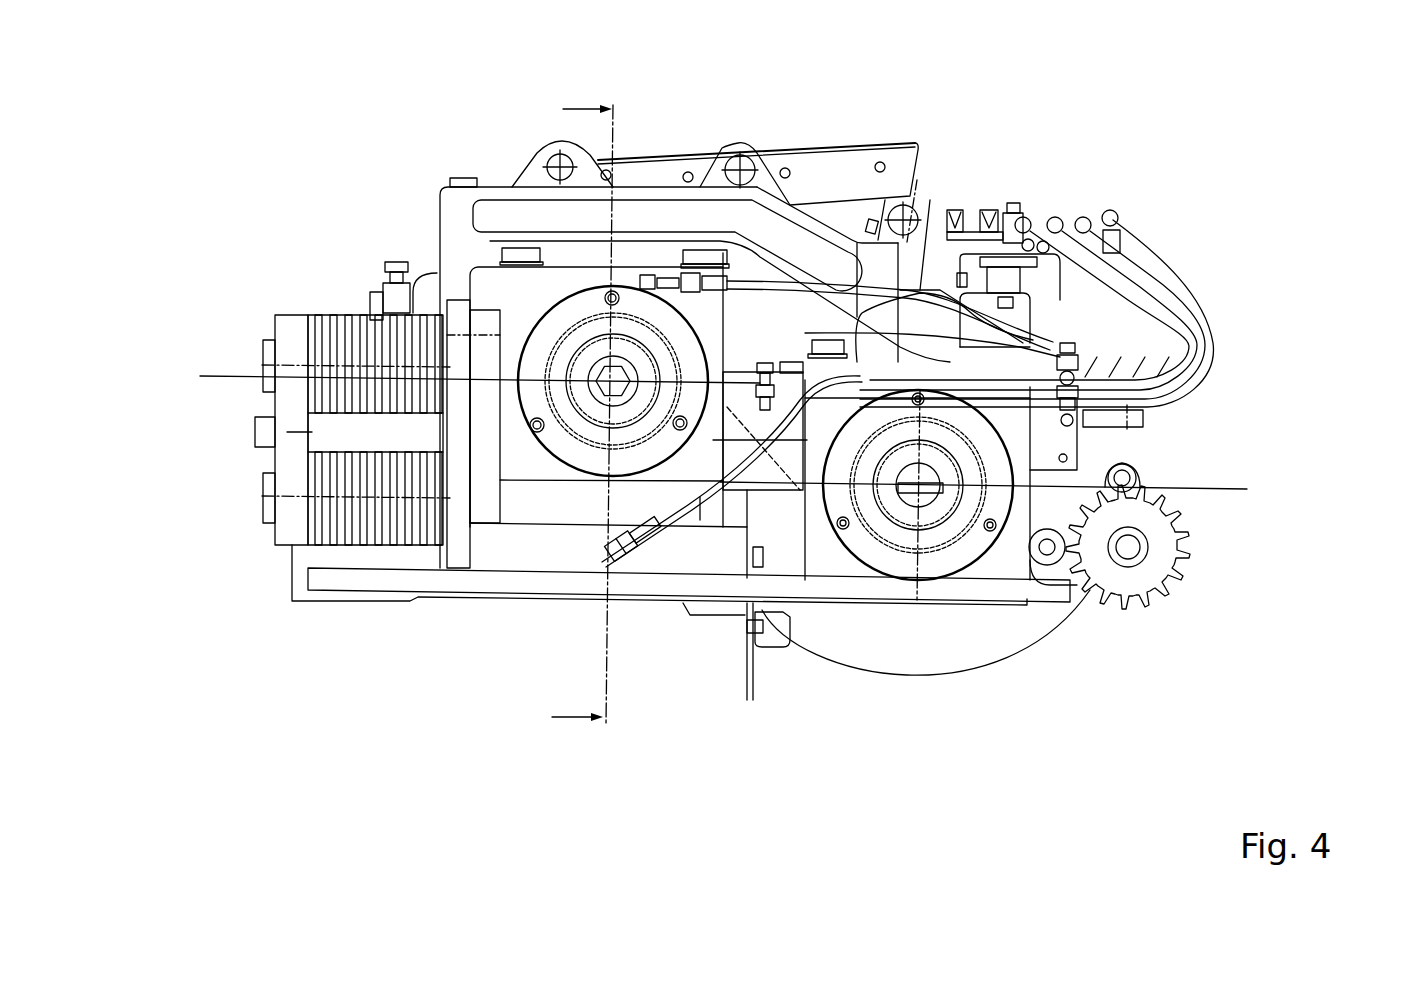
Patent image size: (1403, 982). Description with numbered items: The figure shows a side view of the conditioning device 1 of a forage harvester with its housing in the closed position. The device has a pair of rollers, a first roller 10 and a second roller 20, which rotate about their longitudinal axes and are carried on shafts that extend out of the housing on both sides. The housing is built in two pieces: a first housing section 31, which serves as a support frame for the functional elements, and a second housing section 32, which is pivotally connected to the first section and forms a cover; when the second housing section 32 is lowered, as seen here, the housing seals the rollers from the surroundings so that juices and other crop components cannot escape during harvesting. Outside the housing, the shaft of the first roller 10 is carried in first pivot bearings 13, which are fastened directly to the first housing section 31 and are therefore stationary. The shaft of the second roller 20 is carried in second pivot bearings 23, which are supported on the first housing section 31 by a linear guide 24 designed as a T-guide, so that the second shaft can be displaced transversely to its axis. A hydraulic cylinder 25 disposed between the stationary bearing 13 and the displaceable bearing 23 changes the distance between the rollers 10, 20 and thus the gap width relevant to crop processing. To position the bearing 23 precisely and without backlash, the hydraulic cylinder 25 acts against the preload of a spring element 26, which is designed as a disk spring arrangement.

The conditioning device 1 is at (424, 686).
The first roller 10 is at (988, 579).
The first pivot bearings 13 is at (954, 564).
The second roller 20 is at (545, 286).
The second pivot bearings 23 is at (544, 325).
The linear guide 24 is at (535, 521).
The hydraulic cylinder 25 is at (773, 477).
The spring element 26 is at (280, 294).
The first housing section 31 is at (716, 116).
The second housing section 32 is at (662, 623).